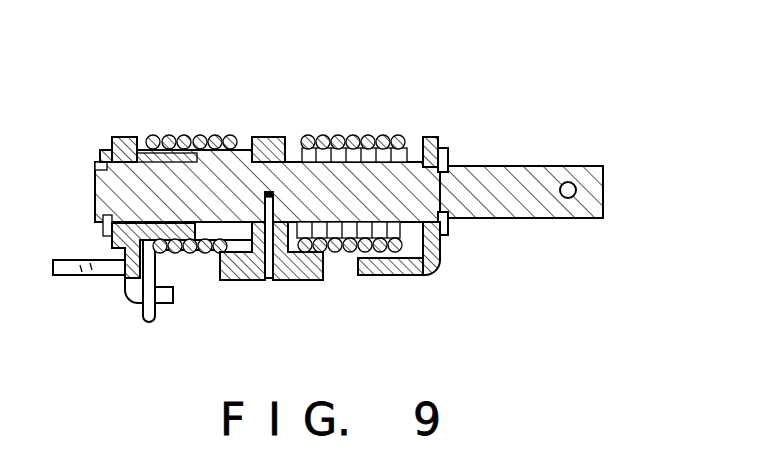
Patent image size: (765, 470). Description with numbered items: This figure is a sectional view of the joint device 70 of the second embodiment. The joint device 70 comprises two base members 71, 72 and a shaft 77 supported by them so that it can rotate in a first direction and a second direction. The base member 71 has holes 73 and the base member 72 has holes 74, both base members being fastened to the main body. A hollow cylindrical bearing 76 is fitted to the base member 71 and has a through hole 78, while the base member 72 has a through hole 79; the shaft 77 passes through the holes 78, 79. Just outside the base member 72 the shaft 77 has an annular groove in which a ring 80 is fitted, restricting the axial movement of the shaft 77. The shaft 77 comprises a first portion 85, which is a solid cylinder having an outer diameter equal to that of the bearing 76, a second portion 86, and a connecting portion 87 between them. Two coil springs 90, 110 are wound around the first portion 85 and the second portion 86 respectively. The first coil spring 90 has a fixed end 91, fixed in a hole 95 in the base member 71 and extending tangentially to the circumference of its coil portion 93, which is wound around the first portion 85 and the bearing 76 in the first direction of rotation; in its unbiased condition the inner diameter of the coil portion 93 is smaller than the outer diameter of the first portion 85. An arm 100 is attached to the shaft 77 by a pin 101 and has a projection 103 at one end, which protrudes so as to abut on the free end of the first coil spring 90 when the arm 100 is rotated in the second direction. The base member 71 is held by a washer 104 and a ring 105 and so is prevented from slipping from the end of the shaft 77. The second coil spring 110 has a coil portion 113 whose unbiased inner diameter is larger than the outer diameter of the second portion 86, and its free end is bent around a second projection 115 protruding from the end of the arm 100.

The joint device 70 is at (329, 201).
The base member 71 is at (123, 279).
The base member 72 is at (427, 276).
The holes 73 is at (83, 278).
The holes 74 is at (383, 277).
The hollow cylindrical bearing 76 is at (182, 135).
The shaft 77 is at (473, 180).
The through hole 78 is at (140, 163).
The through hole 79 is at (415, 162).
The ring 80 is at (448, 152).
The first portion 85 is at (229, 134).
The second portion 86 is at (353, 135).
The connecting portion 87 is at (587, 167).
The first coil spring 90 is at (191, 99).
The fixed end 91 is at (140, 316).
The coil portion 93 is at (201, 136).
The hole 95 is at (164, 304).
The arm 100 is at (295, 292).
The pin 101 is at (253, 281).
The projection 103 is at (215, 266).
The washer 104 is at (107, 152).
The ring 105 is at (106, 163).
The second coil spring 110 is at (349, 98).
The coil portion 113 is at (324, 135).
The second projection 115 is at (323, 270).